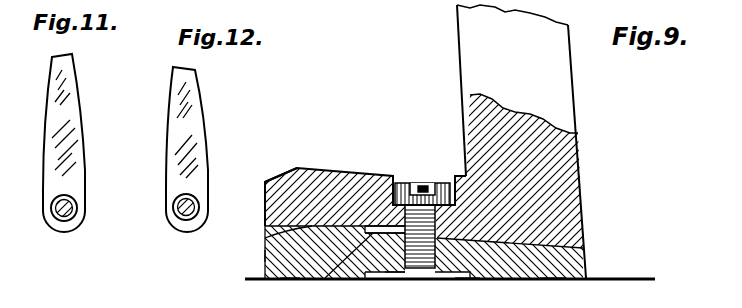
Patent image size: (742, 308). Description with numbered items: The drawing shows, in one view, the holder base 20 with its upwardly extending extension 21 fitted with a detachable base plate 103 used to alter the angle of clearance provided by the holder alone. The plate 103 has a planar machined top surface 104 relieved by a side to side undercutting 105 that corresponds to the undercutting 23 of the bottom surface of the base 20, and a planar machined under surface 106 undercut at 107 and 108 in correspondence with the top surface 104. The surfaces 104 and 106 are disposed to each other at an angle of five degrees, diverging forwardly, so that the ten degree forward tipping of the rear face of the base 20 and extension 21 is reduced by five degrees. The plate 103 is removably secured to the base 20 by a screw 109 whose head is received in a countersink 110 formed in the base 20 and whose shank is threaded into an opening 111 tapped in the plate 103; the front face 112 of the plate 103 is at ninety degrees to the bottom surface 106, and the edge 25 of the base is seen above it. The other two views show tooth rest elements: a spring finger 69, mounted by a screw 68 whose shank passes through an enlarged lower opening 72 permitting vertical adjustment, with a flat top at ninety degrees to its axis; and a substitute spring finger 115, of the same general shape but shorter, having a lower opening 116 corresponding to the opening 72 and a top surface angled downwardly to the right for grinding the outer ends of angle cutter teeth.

In FIG. 9, the base 20 is at (302, 178).
In FIG. 9, the extension 21 is at (560, 90).
In FIG. 9, the side to side undercutting 23 is at (373, 230).
In FIG. 9, the chamfered edge 25 is at (263, 197).
In FIG. 9, the detachable base plate 103 is at (568, 260).
In FIG. 9, the top surface 104 is at (265, 238).
In FIG. 9, the side to side undercutting 105 is at (335, 265).
In FIG. 9, the under surface 106 is at (290, 281).
In FIG. 9, the undercutting 107 is at (467, 279).
In FIG. 9, the undercutting 108 is at (349, 270).
In FIG. 9, the screw 109 is at (432, 190).
In FIG. 9, the countersink 110 is at (402, 182).
In FIG. 9, the tapped opening 111 is at (437, 277).
In FIG. 9, the front face 112 is at (262, 255).
In FIG. 11, the spring finger 69 is at (68, 118).
In FIG. 11, the screw 68 is at (55, 223).
In FIG. 12, the screw 68 is at (176, 218).
In FIG. 11, the opening 72 is at (75, 220).
In FIG. 12, the spring finger 115 is at (192, 118).
In FIG. 12, the lower opening 116 is at (173, 203).